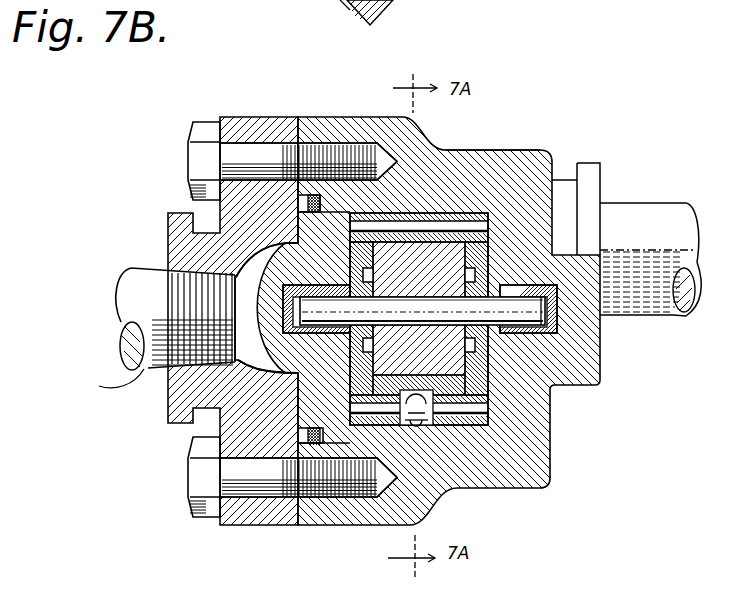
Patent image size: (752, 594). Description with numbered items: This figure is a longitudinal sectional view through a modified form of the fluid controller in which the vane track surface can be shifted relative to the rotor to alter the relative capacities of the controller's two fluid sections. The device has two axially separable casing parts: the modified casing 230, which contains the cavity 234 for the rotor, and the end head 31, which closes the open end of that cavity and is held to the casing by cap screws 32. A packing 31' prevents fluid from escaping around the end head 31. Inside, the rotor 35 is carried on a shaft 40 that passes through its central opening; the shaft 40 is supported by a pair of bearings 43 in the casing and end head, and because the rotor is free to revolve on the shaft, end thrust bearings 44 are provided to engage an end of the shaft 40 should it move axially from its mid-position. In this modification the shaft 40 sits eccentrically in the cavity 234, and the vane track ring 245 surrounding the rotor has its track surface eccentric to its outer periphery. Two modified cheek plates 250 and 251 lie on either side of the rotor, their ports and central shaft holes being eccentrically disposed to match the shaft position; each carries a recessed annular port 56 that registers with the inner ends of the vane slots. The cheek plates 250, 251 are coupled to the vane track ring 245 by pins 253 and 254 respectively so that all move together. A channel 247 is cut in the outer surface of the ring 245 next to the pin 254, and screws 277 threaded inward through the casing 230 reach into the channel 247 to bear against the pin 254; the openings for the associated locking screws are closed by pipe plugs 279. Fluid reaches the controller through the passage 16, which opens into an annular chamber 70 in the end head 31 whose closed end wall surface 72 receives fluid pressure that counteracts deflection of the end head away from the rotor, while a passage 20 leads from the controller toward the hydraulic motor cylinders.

The passage 16 is at (128, 384).
The passage 20 is at (613, 205).
The end head 31 is at (351, 307).
The packing 31' is at (301, 321).
The cap screws 32 is at (186, 154).
The rotor 35 is at (405, 284).
The shaft 40 is at (443, 318).
The bearings 43 is at (284, 287).
The end thrust bearings 44 is at (291, 318).
The port 56 is at (363, 273).
The annular chamber 70 is at (242, 290).
The wall surface 72 is at (238, 365).
The casing 230 is at (438, 156).
The cavity 234 is at (450, 217).
The vane track ring 245 is at (409, 214).
The channel 247 is at (424, 420).
The cheek plate 250 is at (483, 382).
The cheek plate 251 is at (333, 393).
The pin 253 is at (489, 223).
The pin 254 is at (489, 412).
The screws 277 is at (420, 420).
The pipe plugs 279 is at (313, 13).